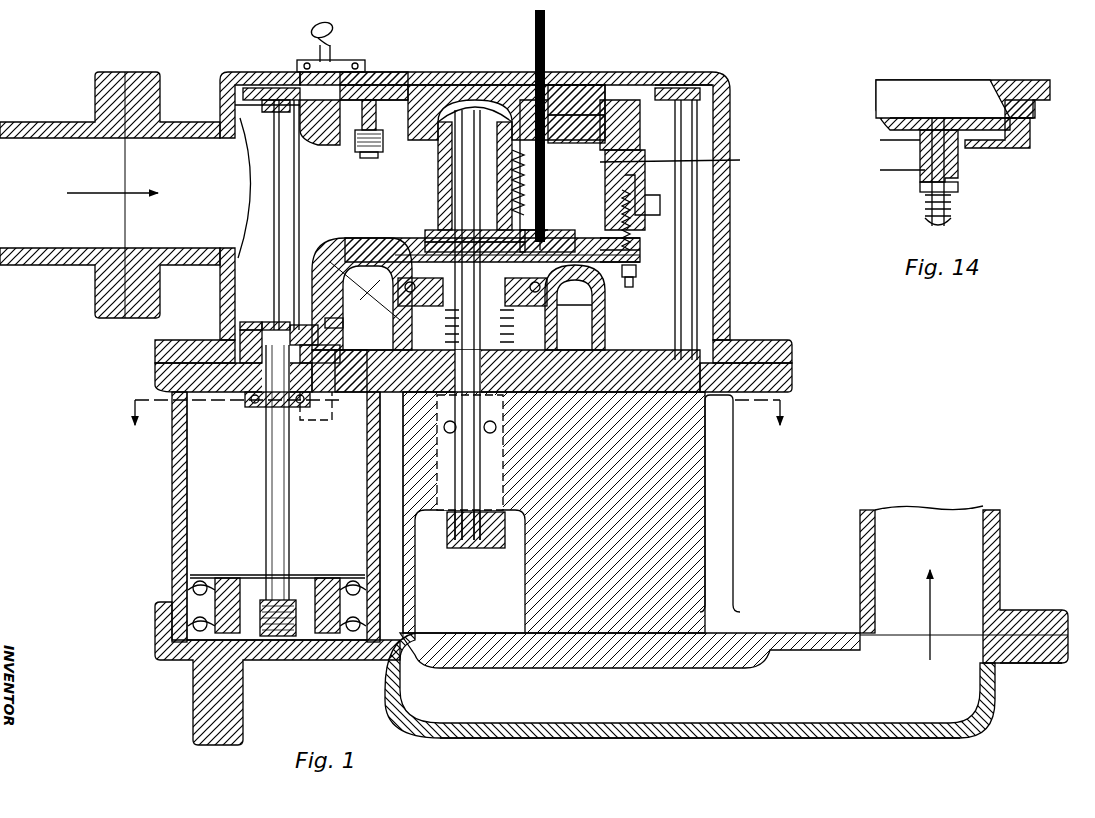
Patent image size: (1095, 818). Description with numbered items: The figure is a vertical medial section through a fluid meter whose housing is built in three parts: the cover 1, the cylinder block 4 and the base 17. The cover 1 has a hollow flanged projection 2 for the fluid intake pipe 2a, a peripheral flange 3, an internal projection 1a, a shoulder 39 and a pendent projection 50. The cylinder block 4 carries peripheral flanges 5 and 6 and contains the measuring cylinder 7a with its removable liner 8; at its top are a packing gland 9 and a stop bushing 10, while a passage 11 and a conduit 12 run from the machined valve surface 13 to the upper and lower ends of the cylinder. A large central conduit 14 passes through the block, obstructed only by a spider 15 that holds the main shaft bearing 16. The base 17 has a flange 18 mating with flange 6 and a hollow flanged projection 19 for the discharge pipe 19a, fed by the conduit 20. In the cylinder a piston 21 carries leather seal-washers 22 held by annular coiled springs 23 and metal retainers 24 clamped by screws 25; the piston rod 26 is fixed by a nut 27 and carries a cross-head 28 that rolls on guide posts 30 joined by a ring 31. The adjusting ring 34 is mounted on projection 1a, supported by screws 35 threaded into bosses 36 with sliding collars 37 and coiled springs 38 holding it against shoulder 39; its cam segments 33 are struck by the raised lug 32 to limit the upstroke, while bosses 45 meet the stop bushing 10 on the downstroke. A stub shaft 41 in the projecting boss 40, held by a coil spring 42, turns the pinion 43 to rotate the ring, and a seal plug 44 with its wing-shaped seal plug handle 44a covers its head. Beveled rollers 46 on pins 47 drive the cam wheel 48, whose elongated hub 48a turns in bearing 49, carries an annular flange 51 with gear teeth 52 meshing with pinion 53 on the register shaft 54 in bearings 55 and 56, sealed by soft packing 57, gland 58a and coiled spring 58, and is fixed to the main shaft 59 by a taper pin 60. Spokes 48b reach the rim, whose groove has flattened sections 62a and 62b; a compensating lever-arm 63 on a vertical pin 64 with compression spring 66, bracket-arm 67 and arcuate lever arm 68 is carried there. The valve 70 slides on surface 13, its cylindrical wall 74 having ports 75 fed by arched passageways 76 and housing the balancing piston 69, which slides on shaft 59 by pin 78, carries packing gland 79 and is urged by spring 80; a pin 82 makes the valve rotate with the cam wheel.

In FIG. 1, the cover 1 is at (730, 132).
In FIG. 14, the cover 1 is at (990, 92).
In FIG. 1, the internal projection 1a is at (290, 108).
In FIG. 14, the internal projection 1a is at (990, 125).
In FIG. 1, the hollow flanged projection 2 is at (160, 75).
In FIG. 1, the fluid intake pipe 2a is at (24, 103).
In FIG. 1, the peripheral flange 3 is at (158, 345).
In FIG. 1, the cylinder block 4 is at (700, 555).
In FIG. 1, the peripheral flange 5 is at (792, 385).
In FIG. 1, the peripheral flange 6 is at (156, 613).
In FIG. 1, the liquid measuring cylinder 7a is at (205, 478).
In FIG. 1, the removable liner 8 is at (172, 540).
In FIG. 1, the packing gland 9 is at (247, 407).
In FIG. 1, the stop bushing 10 is at (165, 390).
In FIG. 1, the passage 11 is at (362, 380).
In FIG. 1, the conduit 12 is at (372, 482).
In FIG. 1, the machined valve surface 13 is at (600, 362).
In FIG. 1, the central conduit 14 is at (470, 612).
In FIG. 1, the spider 15 is at (390, 462).
In FIG. 1, the main shaft bearing 16 is at (450, 514).
In FIG. 1, the base 17 is at (680, 740).
In FIG. 1, the peripheral flange 18 is at (158, 652).
In FIG. 1, the hollow flanged projection 19 is at (1048, 665).
In FIG. 1, the fluid discharge pipe 19a is at (1000, 545).
In FIG. 1, the conduit 20 is at (690, 685).
In FIG. 1, the piston 21 is at (258, 590).
In FIG. 1, the leather seal-washer 22 is at (215, 600).
In FIG. 1, the annular coiled spring 23 is at (195, 585).
In FIG. 1, the metal retainer 24 is at (300, 585).
In FIG. 1, the screw 25 is at (295, 648).
In FIG. 1, the piston rod 26 is at (278, 540).
In FIG. 1, the nut 27 is at (290, 636).
In FIG. 1, the cross-head 28 is at (250, 332).
In FIG. 1, the guide post 30 is at (276, 205).
In FIG. 1, the ring 31 is at (265, 90).
In FIG. 1, the raised lug 32 is at (296, 325).
In FIG. 1, the stroke limiting cam segment 33 is at (300, 130).
In FIG. 1, the adjusting ring 34 is at (300, 115).
In FIG. 14, the adjusting ring 34 is at (1030, 128).
In FIG. 1, the screw 35 is at (684, 160).
In FIG. 14, the screw 35 is at (925, 222).
In FIG. 1, the boss 36 is at (700, 75).
In FIG. 14, the boss 36 is at (920, 145).
In FIG. 14, the sliding collar 37 is at (960, 187).
In FIG. 14, the coiled spring 38 is at (955, 200).
In FIG. 1, the shoulder 39 is at (325, 62).
In FIG. 14, the shoulder 39 is at (1035, 108).
In FIG. 1, the projecting boss 40 is at (350, 128).
In FIG. 1, the stub shaft 41 is at (385, 105).
In FIG. 1, the coil spring 42 is at (440, 100).
In FIG. 1, the pinion 43 is at (355, 150).
In FIG. 1, the seal plug 44 is at (375, 72).
In FIG. 1, the wing nut 44a is at (333, 31).
In FIG. 1, the boss 45 is at (250, 345).
In FIG. 1, the beveled roller 46 is at (275, 320).
In FIG. 1, the pin 47 is at (370, 300).
In FIG. 1, the cam wheel 48 is at (415, 240).
In FIG. 1, the elongated hub 48a is at (475, 111).
In FIG. 1, the arm or spoke 48b is at (358, 286).
In FIG. 1, the bearing 49 is at (438, 158).
In FIG. 1, the pendent projection 50 is at (438, 178).
In FIG. 1, the annular flange 51 is at (440, 225).
In FIG. 1, the gear teeth 52 is at (430, 238).
In FIG. 1, the pinion 53 is at (555, 238).
In FIG. 1, the shaft 54 is at (548, 40).
In FIG. 1, the bearing 55 is at (530, 210).
In FIG. 1, the bearing 56 is at (555, 85).
In FIG. 1, the soft packing 57 is at (580, 115).
In FIG. 1, the coiled spring 58 is at (620, 105).
In FIG. 1, the gland 58a is at (522, 120).
In FIG. 1, the main shaft 59 is at (480, 400).
In FIG. 1, the taper pin 60 is at (526, 235).
In FIG. 1, the flattened section of cam-groove 62a is at (630, 160).
In FIG. 1, the flattened section of cam-groove 62b is at (326, 402).
In FIG. 1, the piston stroke compensating lever-arm 63 is at (640, 185).
In FIG. 1, the vertical pin 64 is at (640, 238).
In FIG. 1, the compression spring 66 is at (640, 252).
In FIG. 1, the bracket-arm 67 is at (640, 264).
In FIG. 1, the arcuate lever arm 68 is at (632, 280).
In FIG. 1, the piston 69 is at (575, 305).
In FIG. 1, the valve 70 is at (245, 215).
In FIG. 1, the vertical cylindrical wall 74 is at (365, 235).
In FIG. 1, the port 75 is at (415, 300).
In FIG. 1, the arched passageway 76 is at (575, 307).
In FIG. 1, the pin 78 is at (450, 340).
In FIG. 1, the packing gland 79 is at (440, 240).
In FIG. 1, the spiral compression spring 80 is at (520, 328).
In FIG. 1, the pin 82 is at (345, 325).